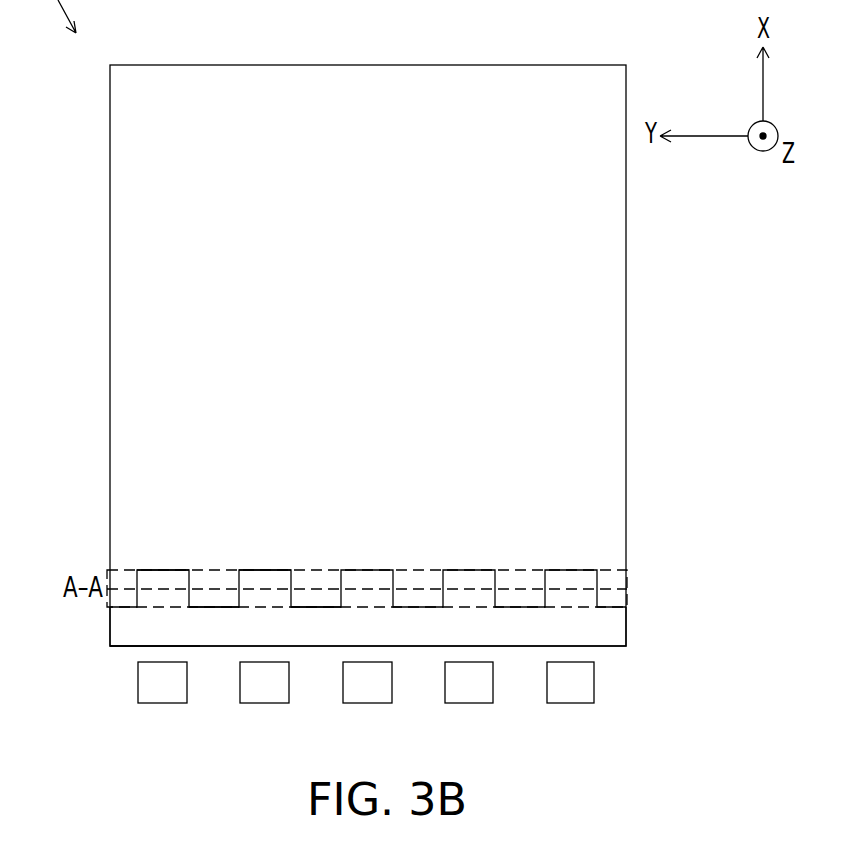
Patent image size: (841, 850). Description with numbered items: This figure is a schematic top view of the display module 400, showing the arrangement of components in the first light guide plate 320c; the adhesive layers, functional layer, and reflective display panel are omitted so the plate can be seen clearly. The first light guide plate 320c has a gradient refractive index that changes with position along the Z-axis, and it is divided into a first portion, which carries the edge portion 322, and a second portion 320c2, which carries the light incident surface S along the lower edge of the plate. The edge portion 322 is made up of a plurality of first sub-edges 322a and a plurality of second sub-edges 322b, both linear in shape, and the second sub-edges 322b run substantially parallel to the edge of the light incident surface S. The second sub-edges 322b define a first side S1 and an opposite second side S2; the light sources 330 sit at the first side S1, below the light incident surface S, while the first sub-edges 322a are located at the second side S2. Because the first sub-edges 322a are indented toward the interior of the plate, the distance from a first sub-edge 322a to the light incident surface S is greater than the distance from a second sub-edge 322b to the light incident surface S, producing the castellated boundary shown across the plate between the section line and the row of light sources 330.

The first light guide plate 320c is at (140, 199).
The edge portion 322 is at (122, 568).
The first sub-edges 322a is at (163, 569).
The second sub-edges 322b is at (218, 608).
The second portion 320c2 is at (120, 623).
The light incident surface S is at (129, 661).
The light sources 330 is at (465, 698).
The display module 400 is at (725, 724).
The first side S1 is at (573, 625).
The second side S2 is at (573, 605).